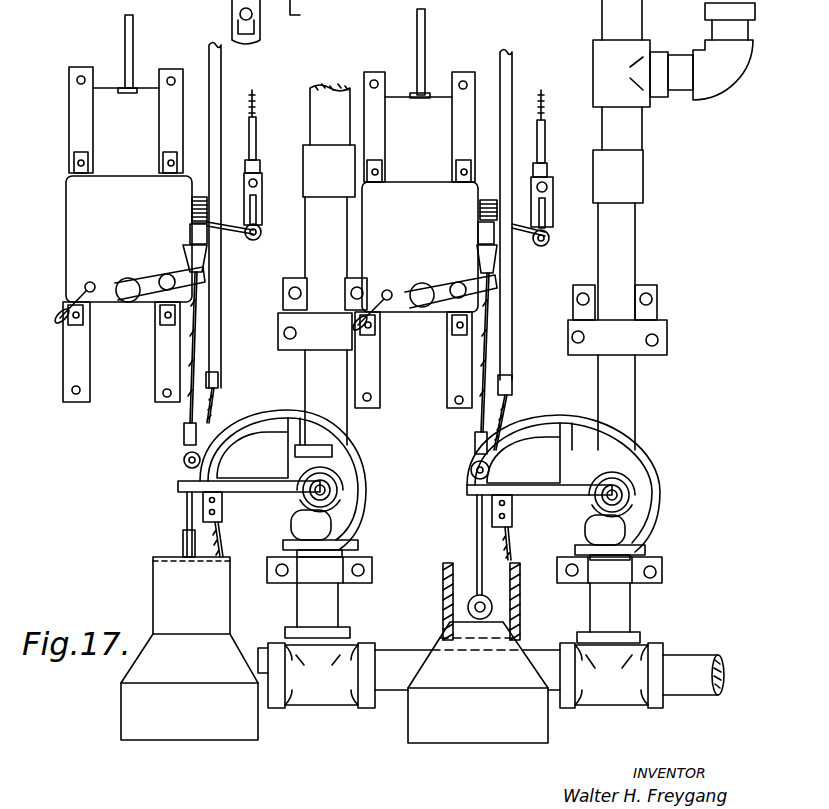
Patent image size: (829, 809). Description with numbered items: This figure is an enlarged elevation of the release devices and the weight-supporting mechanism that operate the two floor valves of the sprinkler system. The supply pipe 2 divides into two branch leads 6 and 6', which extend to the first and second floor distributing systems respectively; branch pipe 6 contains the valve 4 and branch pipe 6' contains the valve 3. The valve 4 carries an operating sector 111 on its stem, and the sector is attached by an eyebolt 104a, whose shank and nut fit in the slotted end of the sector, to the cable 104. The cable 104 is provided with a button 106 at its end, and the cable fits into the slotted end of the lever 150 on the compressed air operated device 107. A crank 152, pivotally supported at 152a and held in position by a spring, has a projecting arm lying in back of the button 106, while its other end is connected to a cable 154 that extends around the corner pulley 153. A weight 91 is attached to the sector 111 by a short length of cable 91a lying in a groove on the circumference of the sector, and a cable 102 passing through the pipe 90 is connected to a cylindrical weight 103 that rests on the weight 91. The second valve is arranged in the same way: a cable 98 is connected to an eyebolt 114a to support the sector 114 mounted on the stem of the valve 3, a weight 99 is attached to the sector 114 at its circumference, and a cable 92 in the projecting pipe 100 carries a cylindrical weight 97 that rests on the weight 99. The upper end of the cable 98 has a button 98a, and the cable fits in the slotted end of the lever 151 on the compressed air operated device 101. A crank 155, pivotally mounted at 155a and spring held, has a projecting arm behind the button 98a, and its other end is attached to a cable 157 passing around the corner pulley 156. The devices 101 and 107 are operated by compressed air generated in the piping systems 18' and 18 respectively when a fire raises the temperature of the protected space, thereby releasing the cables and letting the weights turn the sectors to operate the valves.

The pipe 2 is at (714, 660).
The valve 3 is at (340, 463).
The valve 4 is at (630, 470).
The branch lead 6 is at (656, 354).
The branch lead 6' is at (409, 384).
The piping system 18 is at (432, 53).
The piping system 18' is at (145, 54).
The pipe 90 is at (512, 381).
The weight 91 is at (482, 731).
The cable 91a is at (470, 521).
The cable 92 is at (221, 400).
The cylindrical weight 97 is at (191, 595).
The cable 98 is at (187, 410).
The button 98a is at (207, 255).
The weight 99 is at (196, 730).
The projecting pipe 100 is at (222, 333).
The compressed air operated device 101 is at (127, 234).
The cable 102 is at (507, 408).
The cylindrical weight 103 is at (520, 612).
The cable 104 is at (473, 427).
The eyebolt 104a is at (467, 483).
The button 106 is at (497, 262).
The compressed air operated device 107 is at (416, 240).
The operating sector 111 is at (632, 443).
The sector 114 is at (345, 443).
The eyebolt 114a is at (185, 470).
The lever 150 is at (440, 316).
The lever 151 is at (140, 318).
The crank 152 is at (480, 237).
The pivot 152a is at (481, 208).
The corner pulley 153 is at (550, 220).
The cable 154 is at (545, 112).
The crank 155 is at (192, 233).
The pivot 155a is at (192, 205).
The corner pulley 156 is at (262, 214).
The cable 157 is at (262, 100).